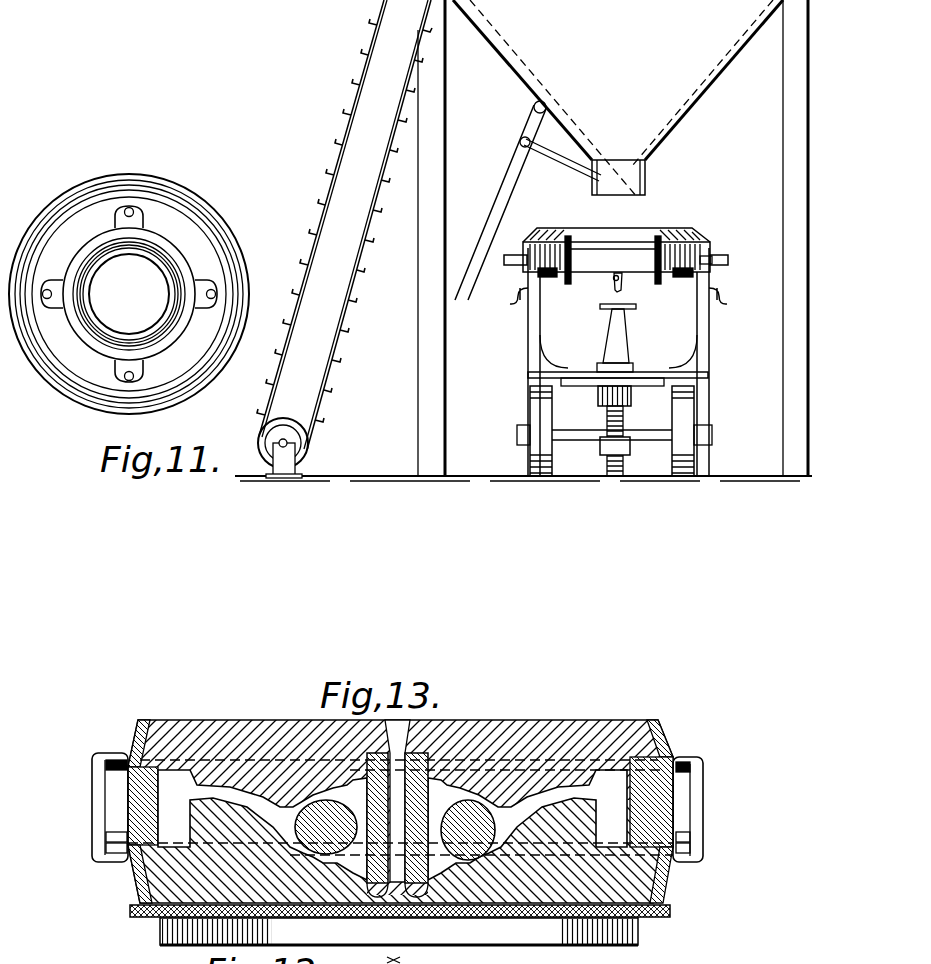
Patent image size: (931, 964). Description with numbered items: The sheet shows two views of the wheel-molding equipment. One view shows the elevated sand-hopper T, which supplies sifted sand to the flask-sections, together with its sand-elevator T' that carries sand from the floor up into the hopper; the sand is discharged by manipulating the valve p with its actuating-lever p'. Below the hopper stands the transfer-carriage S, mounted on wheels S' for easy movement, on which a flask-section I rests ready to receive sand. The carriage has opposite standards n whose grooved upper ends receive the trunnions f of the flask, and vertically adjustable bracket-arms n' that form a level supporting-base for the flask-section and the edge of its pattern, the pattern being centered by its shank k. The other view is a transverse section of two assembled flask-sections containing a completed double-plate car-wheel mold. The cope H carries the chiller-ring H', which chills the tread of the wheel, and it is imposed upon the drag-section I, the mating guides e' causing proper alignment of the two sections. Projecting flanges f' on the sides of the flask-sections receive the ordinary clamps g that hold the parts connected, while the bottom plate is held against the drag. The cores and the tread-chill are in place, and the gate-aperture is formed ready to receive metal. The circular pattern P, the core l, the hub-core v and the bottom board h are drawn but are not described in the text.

In FIG. 11, the pulley wheel pattern P is at (222, 234).
In FIG. 11, the elevated sand-hopper T is at (618, 98).
In FIG. 11, the sand-elevator T' is at (453, 239).
In FIG. 11, the valve p is at (618, 188).
In FIG. 11, the actuating-lever p' is at (528, 200).
In FIG. 11, the drag-section I is at (640, 232).
In FIG. 13, the drag-section I is at (667, 886).
In FIG. 11, the clamps g is at (568, 240).
In FIG. 13, the clamps g is at (93, 786).
In FIG. 11, the trunnions f is at (615, 272).
In FIG. 11, the projecting flanges f' is at (719, 244).
In FIG. 13, the projecting flanges f' is at (402, 800).
In FIG. 11, the standards n is at (613, 362).
In FIG. 11, the bracket-arms n' is at (618, 306).
In FIG. 11, the shank k is at (613, 278).
In FIG. 11, the transfer-carriage S is at (638, 362).
In FIG. 11, the wheels s' is at (607, 431).
In FIG. 13, the cope H is at (415, 807).
In FIG. 13, the chiller-ring H' is at (432, 845).
In FIG. 13, the mating guides e' is at (390, 844).
In FIG. 13, the core rings l is at (395, 819).
In FIG. 13, the hub core v is at (408, 808).
In FIG. 13, the bottom board h is at (413, 960).